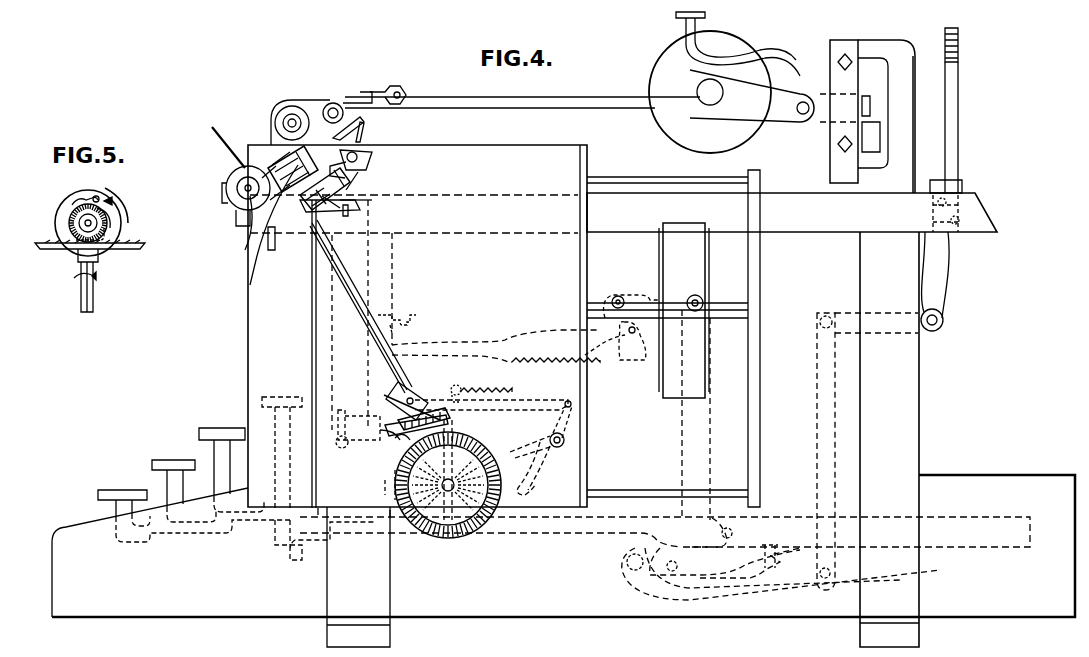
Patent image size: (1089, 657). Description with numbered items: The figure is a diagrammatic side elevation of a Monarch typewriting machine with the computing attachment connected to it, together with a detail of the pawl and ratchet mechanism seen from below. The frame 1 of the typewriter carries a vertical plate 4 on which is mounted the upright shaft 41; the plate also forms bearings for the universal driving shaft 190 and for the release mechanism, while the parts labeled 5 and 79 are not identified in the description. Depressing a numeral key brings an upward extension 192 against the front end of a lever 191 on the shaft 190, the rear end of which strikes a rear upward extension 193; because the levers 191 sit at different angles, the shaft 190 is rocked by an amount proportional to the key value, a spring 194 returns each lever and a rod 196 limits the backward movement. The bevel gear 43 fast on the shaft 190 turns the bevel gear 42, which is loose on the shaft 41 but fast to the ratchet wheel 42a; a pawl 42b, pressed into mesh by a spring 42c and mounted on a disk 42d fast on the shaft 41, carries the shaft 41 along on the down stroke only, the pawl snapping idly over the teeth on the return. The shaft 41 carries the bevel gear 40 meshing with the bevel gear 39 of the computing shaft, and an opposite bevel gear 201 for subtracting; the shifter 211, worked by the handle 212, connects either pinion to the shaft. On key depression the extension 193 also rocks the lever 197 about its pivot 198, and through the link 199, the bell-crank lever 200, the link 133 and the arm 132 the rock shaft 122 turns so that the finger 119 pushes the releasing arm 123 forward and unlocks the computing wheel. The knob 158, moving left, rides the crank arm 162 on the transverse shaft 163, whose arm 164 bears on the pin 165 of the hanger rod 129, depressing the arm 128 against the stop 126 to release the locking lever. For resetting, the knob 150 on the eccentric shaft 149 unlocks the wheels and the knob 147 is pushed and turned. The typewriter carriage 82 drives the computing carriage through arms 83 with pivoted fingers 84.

In FIG. 4, the frame 1 is at (563, 439).
In FIG. 4, the vertical plate 4 is at (417, 326).
In FIG. 4, the frame 5 is at (792, 267).
In FIG. 4, the bevel gear 39 is at (366, 200).
In FIG. 4, the bevel gear 40 is at (291, 241).
In FIG. 4, the upright shaft 41 is at (362, 330).
In FIG. 5, the upright shaft 41 is at (66, 240).
In FIG. 4, the bevel gear 42 is at (450, 422).
In FIG. 5, the bevel gear 42 is at (120, 232).
In FIG. 4, the bevel gear 43 is at (465, 537).
In FIG. 5, the bevel gear 43 is at (142, 246).
In FIG. 4, the bracket 79 is at (284, 101).
In FIG. 4, the typewriter carriage 82 is at (782, 102).
In FIG. 4, the arms 83 is at (542, 97).
In FIG. 4, the fingers 84 is at (392, 88).
In FIG. 4, the finger 119 is at (365, 133).
In FIG. 4, the rock shaft 122 is at (388, 152).
In FIG. 4, the releasing arm 123 is at (363, 120).
In FIG. 4, the stop 126 is at (360, 176).
In FIG. 4, the arm 128 is at (306, 160).
In FIG. 4, the hanger rod 129 is at (312, 322).
In FIG. 4, the arm 132 is at (362, 157).
In FIG. 4, the link 133 is at (370, 283).
In FIG. 4, the knob 147 is at (278, 115).
In FIG. 4, the eccentric shaft 149 is at (330, 104).
In FIG. 4, the small knob 150 is at (345, 101).
In FIG. 4, the knob 158 is at (232, 175).
In FIG. 4, the crank arm 162 is at (236, 214).
In FIG. 4, the transverse shaft 163 is at (248, 234).
In FIG. 4, the arm 164 is at (338, 200).
In FIG. 4, the pin 165 is at (332, 212).
In FIG. 4, the universal driving shaft 190 is at (448, 492).
In FIG. 5, the universal driving shaft 190 is at (93, 298).
In FIG. 4, the levers 191 is at (456, 484).
In FIG. 4, the upward extension 192 is at (392, 492).
In FIG. 4, the rear upward extension 193 is at (540, 444).
In FIG. 4, the spring 194 is at (498, 390).
In FIG. 4, the rod 196 is at (458, 388).
In FIG. 4, the lever 197 is at (536, 466).
In FIG. 4, the pivot 198 is at (565, 441).
In FIG. 4, the link 199 is at (560, 404).
In FIG. 4, the bell-crank lever 200 is at (346, 421).
In FIG. 4, the bevel gear 201 is at (266, 168).
In FIG. 4, the shifter 211 is at (250, 282).
In FIG. 4, the handle 212 is at (212, 127).
In FIG. 4, the ratchet wheel 42a is at (388, 440).
In FIG. 5, the ratchet wheel 42a is at (70, 226).
In FIG. 4, the pawl 42b is at (452, 416).
In FIG. 5, the pawl 42b is at (100, 200).
In FIG. 4, the spring 42c is at (400, 448).
In FIG. 5, the spring 42c is at (76, 200).
In FIG. 4, the disk 42d is at (428, 400).
In FIG. 5, the disk 42d is at (121, 222).